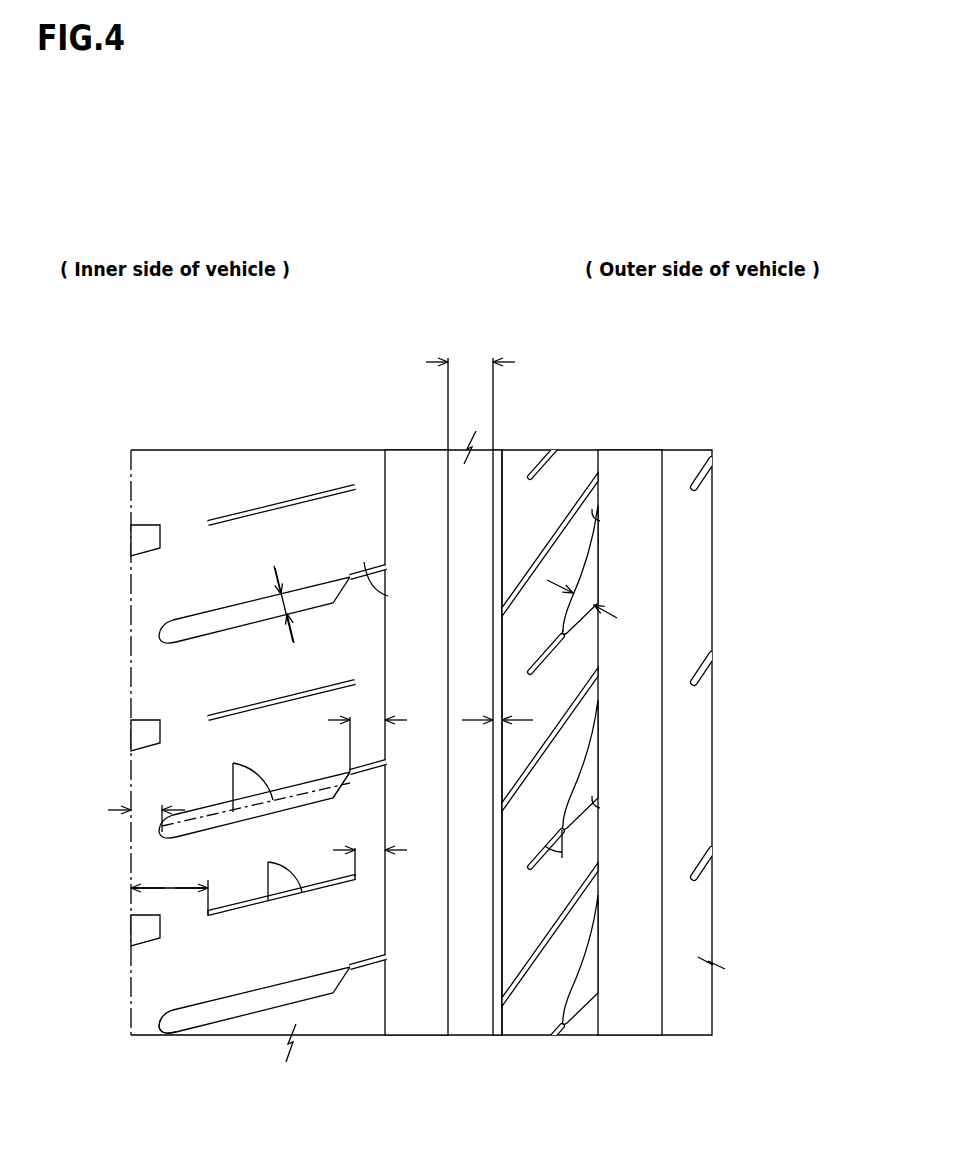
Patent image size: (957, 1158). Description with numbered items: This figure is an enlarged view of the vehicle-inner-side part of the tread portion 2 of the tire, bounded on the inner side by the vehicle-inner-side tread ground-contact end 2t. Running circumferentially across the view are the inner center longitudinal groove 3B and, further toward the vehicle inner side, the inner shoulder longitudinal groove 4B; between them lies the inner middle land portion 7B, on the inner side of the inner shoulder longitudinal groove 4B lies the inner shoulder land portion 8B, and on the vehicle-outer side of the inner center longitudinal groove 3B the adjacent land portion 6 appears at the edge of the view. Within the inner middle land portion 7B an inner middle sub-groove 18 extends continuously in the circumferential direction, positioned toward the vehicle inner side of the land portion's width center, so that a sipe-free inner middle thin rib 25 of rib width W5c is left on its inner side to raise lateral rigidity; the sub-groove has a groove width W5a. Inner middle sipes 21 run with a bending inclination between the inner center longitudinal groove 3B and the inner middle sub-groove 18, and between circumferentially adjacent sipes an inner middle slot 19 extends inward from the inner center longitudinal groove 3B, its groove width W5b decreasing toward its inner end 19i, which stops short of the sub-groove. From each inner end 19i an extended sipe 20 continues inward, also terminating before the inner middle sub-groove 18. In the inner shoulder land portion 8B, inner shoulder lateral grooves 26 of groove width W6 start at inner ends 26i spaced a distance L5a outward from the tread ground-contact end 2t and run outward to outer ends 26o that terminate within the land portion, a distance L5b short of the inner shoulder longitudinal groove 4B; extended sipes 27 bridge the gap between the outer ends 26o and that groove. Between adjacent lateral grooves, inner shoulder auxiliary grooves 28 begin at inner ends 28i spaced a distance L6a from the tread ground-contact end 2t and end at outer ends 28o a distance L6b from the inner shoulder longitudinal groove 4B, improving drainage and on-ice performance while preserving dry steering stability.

The tread portion 2 is at (714, 432).
The vehicle-inner-side tread ground-contact end 2t is at (128, 506).
The inner center longitudinal groove 3B is at (629, 995).
The inner shoulder longitudinal groove 4B is at (430, 995).
The outer shoulder land portion 6 is at (683, 494).
The inner middle land portion 7B is at (569, 492).
The inner shoulder land portion 8B is at (276, 493).
The inner middle sub-groove 18 is at (503, 934).
The inner middle thin rib 25 is at (481, 994).
The inner middle slot 19 is at (590, 574).
The inner end of inner middle slot 19i is at (563, 634).
The extended sipe 20 is at (546, 658).
The inner middle sipe 21 is at (531, 572).
The inner shoulder lateral groove 26 is at (236, 622).
The inner end of inner shoulder lateral groove 26i is at (162, 1028).
The outer end of inner shoulder lateral groove 26o is at (353, 795).
The extended sipe 27 is at (365, 560).
The inner shoulder auxiliary groove 28 is at (265, 513).
The inner end of inner shoulder auxiliary groove 28i is at (208, 913).
The outer end of inner shoulder auxiliary groove 28o is at (357, 877).
The groove width of inner middle sub-groove W5a is at (510, 706).
The groove width of inner middle slot W5b is at (598, 593).
The rib width of inner middle thin rib W5c is at (470, 392).
The groove width of inner shoulder lateral groove W6 is at (299, 601).
The distance from tread ground-contact end to inner end of inner shoulder lateral gr L5a is at (146, 809).
The distance from outer end of inner shoulder lateral groove to inner shoulder longi L5b is at (367, 732).
The distance from tread ground-contact end to inner end of inner shoulder auxiliary L6a is at (169, 889).
The distance from outer end of inner shoulder auxiliary groove to inner shoulder lon L6b is at (370, 851).